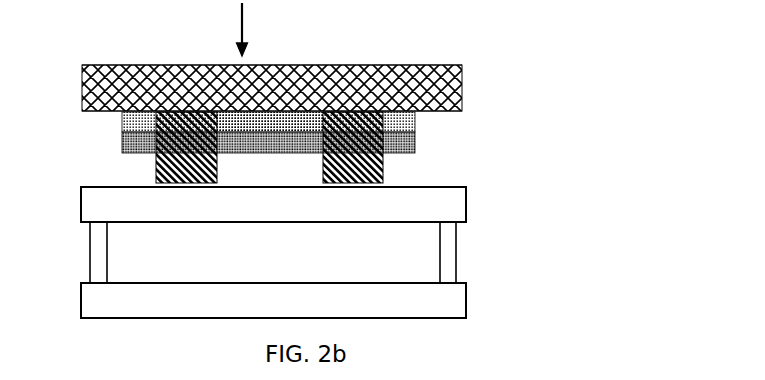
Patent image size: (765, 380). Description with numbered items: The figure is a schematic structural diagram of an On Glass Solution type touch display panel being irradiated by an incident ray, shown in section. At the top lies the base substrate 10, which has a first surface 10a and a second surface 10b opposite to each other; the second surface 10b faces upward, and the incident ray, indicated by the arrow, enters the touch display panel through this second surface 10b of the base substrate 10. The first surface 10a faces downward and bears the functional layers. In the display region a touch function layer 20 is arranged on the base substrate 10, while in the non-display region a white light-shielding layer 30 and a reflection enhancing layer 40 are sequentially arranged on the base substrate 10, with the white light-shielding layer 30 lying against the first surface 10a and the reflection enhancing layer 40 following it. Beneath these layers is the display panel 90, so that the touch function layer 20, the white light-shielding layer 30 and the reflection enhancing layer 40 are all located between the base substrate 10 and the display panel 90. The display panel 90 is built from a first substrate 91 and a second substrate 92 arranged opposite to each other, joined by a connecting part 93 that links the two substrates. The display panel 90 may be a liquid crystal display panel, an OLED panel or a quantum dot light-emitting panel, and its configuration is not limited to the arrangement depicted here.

The base substrate 10 is at (412, 67).
The first surface 10a is at (435, 111).
The second surface 10b is at (433, 72).
The touch function layer 20 is at (187, 148).
The white light-shielding layer 30 is at (142, 111).
The reflection enhancing layer 40 is at (272, 110).
The display panel 90 is at (316, 252).
The first substrate 91 is at (430, 213).
The second substrate 92 is at (298, 300).
The connecting part 93 is at (447, 260).